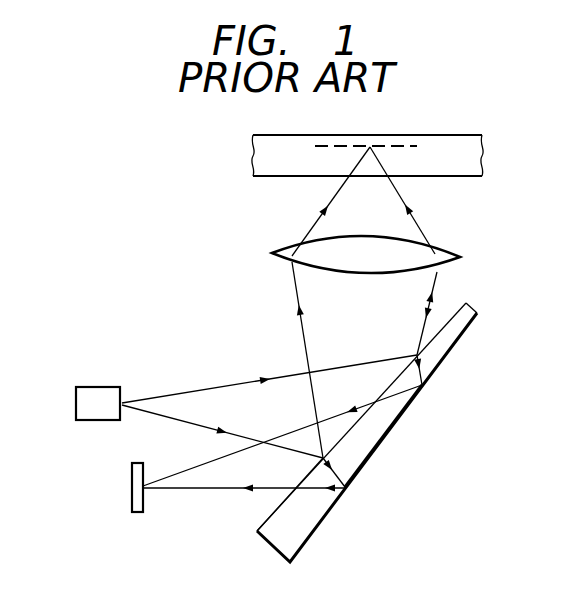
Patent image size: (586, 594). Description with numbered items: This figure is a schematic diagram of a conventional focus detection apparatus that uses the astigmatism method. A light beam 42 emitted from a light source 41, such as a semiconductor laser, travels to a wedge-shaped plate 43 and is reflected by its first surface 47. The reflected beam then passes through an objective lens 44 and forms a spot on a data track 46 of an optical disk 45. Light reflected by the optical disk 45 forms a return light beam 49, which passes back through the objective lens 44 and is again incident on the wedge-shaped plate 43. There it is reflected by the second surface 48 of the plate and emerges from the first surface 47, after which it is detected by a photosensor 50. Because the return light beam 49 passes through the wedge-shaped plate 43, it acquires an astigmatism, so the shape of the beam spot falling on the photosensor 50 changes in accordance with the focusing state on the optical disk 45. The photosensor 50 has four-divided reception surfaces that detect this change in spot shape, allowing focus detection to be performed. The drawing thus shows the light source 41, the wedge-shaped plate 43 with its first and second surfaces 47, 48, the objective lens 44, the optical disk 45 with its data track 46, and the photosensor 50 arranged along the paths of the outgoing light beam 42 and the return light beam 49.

The light source 41 is at (100, 422).
The light beam 42 is at (201, 400).
The wedge-shaped plate 43 is at (470, 334).
The objective lens 44 is at (453, 250).
The optical disk 45 is at (302, 177).
The data track 46 is at (391, 132).
The first surface 47 is at (271, 515).
The second surface 48 is at (410, 403).
The return light beam 49 is at (192, 490).
The photosensor 50 is at (132, 497).